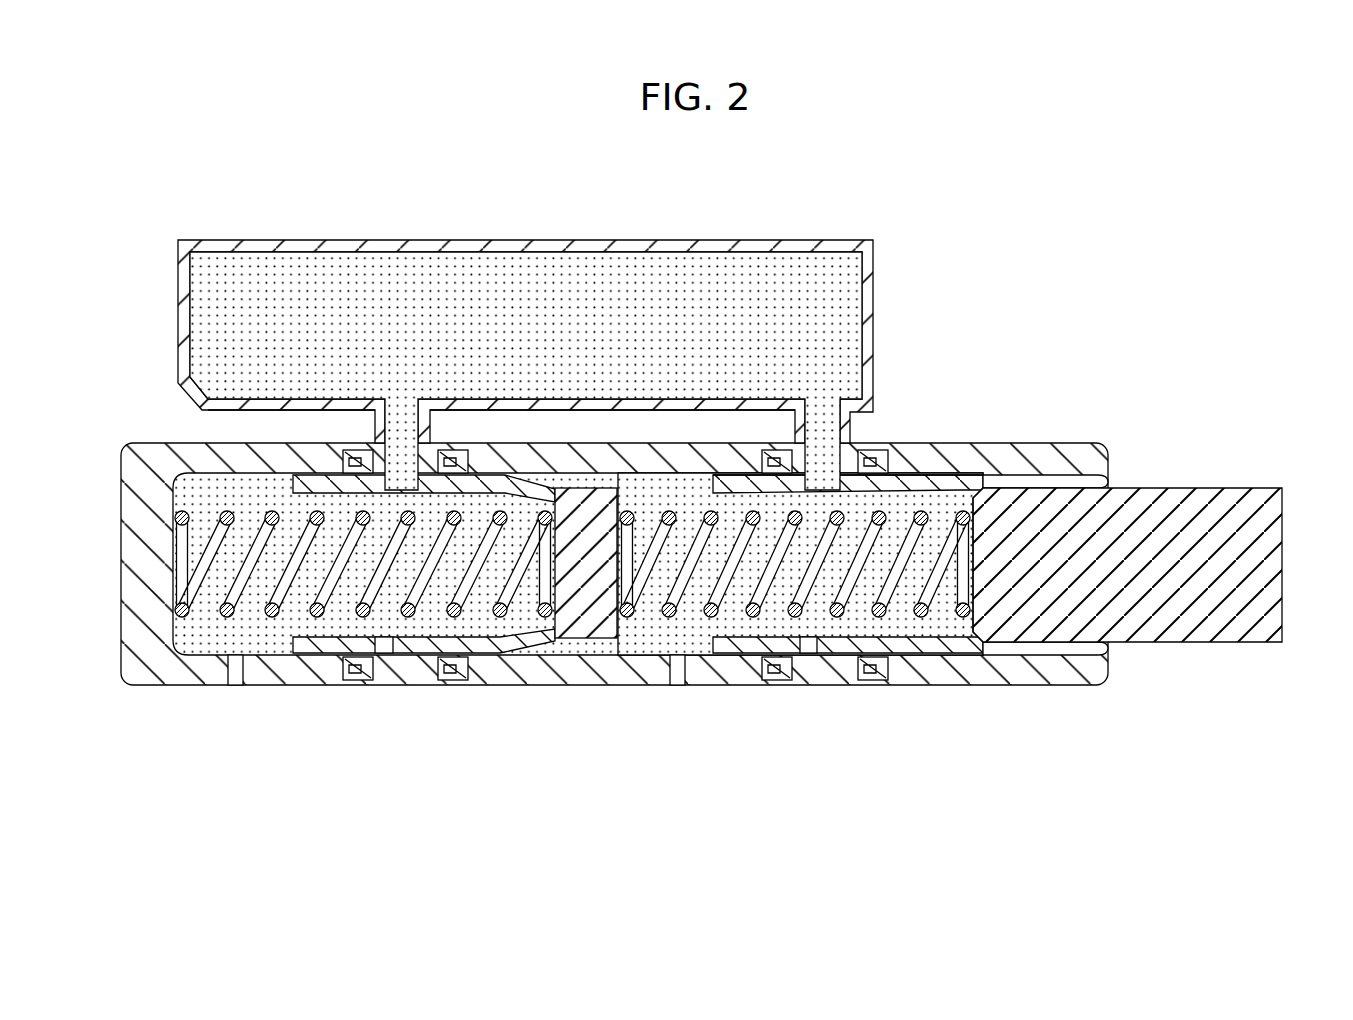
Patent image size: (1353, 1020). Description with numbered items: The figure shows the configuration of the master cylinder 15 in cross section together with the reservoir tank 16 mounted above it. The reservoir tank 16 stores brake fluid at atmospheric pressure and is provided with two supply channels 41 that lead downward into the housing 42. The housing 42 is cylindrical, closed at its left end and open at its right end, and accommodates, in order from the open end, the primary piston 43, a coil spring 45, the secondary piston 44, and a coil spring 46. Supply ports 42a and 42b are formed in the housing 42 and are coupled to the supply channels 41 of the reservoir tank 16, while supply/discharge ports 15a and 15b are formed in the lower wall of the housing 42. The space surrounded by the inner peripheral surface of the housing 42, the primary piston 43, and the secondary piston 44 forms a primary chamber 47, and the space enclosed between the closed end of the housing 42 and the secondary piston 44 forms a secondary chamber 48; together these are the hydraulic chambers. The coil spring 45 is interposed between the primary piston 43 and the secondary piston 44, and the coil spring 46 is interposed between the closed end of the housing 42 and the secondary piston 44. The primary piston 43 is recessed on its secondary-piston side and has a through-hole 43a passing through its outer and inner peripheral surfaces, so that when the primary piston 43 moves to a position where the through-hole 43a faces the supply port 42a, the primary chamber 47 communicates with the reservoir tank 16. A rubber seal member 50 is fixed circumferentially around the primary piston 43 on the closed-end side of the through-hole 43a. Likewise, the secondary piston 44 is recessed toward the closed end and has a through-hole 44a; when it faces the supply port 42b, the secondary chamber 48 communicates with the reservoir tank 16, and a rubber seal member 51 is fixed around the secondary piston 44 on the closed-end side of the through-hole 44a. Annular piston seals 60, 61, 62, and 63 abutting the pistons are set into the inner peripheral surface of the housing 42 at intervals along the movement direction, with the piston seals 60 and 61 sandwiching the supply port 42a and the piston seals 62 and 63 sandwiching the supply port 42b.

The master cylinder 15 is at (701, 471).
The supply/discharge port 15a is at (678, 670).
The supply/discharge port 15b is at (237, 670).
The reservoir tank 16 is at (559, 315).
The supply channel 41 is at (430, 425).
The housing 42 is at (614, 607).
The supply port 42a is at (808, 470).
The supply port 42b is at (400, 465).
The primary piston 43 is at (1203, 645).
The through-hole 43a is at (808, 490).
The secondary piston 44 is at (583, 643).
The through-hole 44a is at (357, 457).
The coil spring 45 is at (718, 640).
The coil spring 46 is at (283, 612).
The primary chamber 47 is at (823, 614).
The secondary chamber 48 is at (398, 614).
The seal member 50 is at (755, 655).
The seal member 51 is at (325, 655).
The piston seal 60 is at (873, 680).
The piston seal 61 is at (778, 680).
The piston seal 62 is at (453, 680).
The piston seal 63 is at (358, 680).